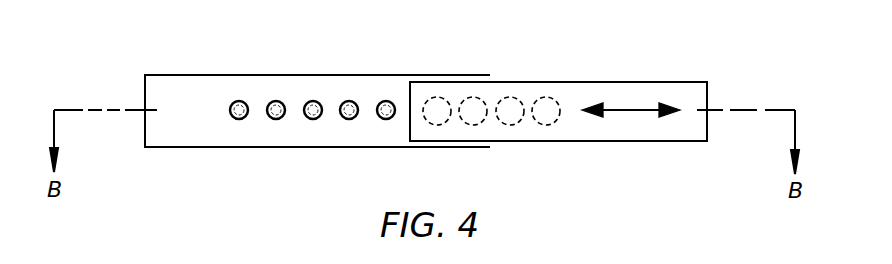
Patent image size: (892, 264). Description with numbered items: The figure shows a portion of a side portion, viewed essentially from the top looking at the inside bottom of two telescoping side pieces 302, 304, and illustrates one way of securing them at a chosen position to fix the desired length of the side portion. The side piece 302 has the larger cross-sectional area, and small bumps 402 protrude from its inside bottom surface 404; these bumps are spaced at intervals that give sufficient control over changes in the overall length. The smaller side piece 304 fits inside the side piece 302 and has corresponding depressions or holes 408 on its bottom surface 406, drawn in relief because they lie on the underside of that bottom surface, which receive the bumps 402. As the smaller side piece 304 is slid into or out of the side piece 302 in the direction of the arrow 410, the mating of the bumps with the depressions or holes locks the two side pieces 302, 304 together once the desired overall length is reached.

The side piece 302 is at (267, 148).
The side piece 304 is at (653, 142).
The bumps 402 is at (238, 100).
The inside bottom surface 404 is at (185, 83).
The bottom surface 406 is at (533, 132).
The depressions or holes 408 is at (433, 97).
The arrow 410 is at (635, 110).